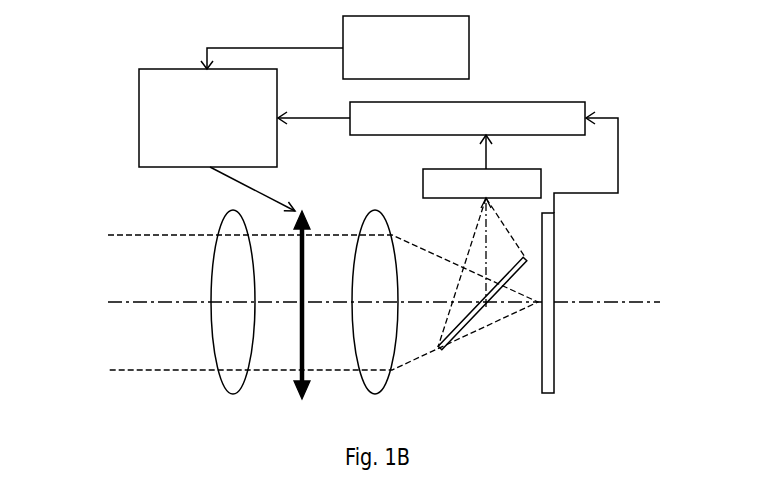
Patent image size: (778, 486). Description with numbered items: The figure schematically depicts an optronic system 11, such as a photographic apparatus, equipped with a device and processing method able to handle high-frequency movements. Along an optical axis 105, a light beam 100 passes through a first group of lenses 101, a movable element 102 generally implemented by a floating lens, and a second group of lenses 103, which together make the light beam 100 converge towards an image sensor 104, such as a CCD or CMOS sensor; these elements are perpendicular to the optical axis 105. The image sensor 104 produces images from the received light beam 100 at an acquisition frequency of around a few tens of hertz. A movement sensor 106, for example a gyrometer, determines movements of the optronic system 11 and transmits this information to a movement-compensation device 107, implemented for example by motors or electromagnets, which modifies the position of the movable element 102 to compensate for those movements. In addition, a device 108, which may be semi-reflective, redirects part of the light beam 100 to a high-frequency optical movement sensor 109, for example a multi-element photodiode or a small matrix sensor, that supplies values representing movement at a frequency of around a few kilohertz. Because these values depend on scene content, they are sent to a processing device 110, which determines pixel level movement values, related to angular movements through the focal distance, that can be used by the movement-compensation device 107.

The optronic system 11 is at (82, 310).
The light beam 100 is at (126, 233).
The group of lenses 101 is at (223, 386).
The movable element 102 is at (297, 390).
The group of lenses 103 is at (367, 393).
The image sensor 104 is at (541, 386).
The optical axis 105 is at (650, 301).
The movement sensor 106 is at (469, 48).
The movement-compensation device 107 is at (138, 118).
The device for redirecting part of the light beam 108 is at (470, 323).
The high-frequency optical movement sensor 109 is at (541, 183).
The processing device 110 is at (585, 103).